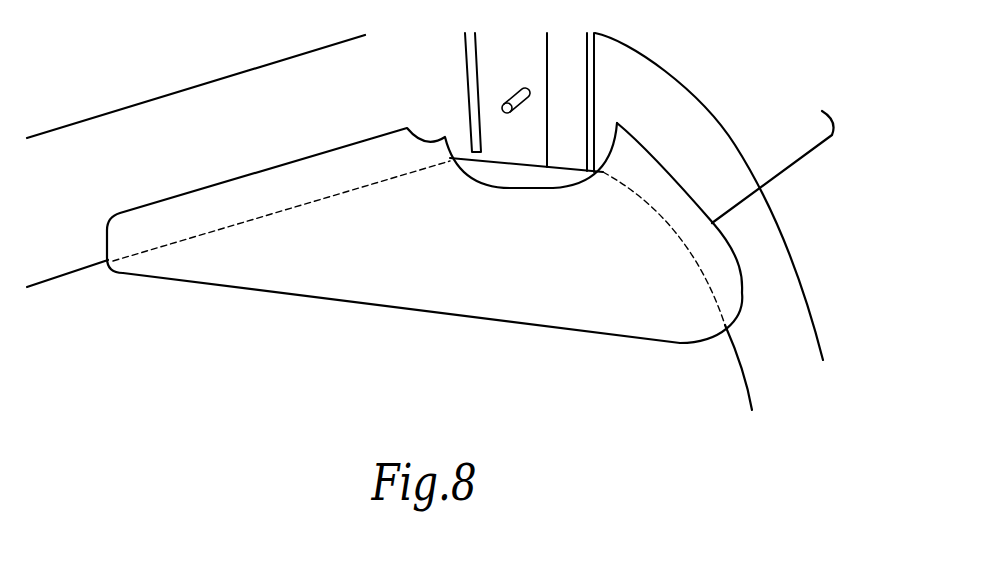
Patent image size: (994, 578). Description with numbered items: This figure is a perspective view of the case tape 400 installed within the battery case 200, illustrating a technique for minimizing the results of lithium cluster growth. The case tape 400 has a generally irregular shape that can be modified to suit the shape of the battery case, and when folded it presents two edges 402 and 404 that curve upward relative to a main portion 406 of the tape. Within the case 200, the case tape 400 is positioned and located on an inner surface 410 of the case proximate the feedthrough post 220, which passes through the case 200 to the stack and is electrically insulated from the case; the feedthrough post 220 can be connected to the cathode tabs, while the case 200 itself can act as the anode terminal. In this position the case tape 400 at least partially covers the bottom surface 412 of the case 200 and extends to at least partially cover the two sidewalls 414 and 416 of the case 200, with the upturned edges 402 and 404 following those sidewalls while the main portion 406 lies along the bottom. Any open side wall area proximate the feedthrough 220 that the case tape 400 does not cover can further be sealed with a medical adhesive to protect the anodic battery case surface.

The case 200 is at (787, 247).
The feedthrough post 220 is at (508, 100).
The case tape 400 is at (605, 320).
The edge 402 is at (822, 110).
The edge 404 is at (177, 207).
The main portion 406 is at (472, 290).
The inner surface 410 is at (360, 313).
The bottom surface 412 is at (290, 297).
The sidewall 414 is at (238, 108).
The sidewall 416 is at (690, 123).